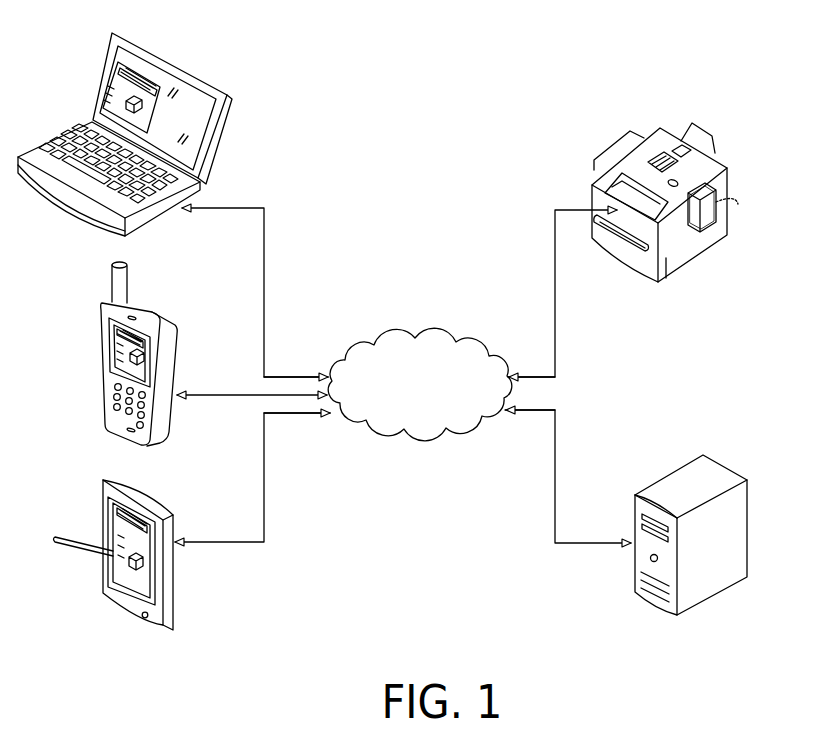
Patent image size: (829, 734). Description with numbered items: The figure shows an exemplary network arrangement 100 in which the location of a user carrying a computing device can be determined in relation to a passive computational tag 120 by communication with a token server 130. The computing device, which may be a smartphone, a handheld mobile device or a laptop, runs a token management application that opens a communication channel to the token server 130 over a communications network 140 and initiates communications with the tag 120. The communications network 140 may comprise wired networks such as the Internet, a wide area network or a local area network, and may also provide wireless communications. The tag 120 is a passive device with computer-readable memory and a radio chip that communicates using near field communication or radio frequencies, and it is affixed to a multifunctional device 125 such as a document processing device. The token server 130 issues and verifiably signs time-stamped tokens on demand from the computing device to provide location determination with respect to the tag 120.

The network arrangement 100 is at (450, 106).
The passive computational tag 120 is at (703, 217).
The multifunctional device 125 is at (662, 128).
The token server 130 is at (660, 480).
The communications network 140 is at (420, 334).